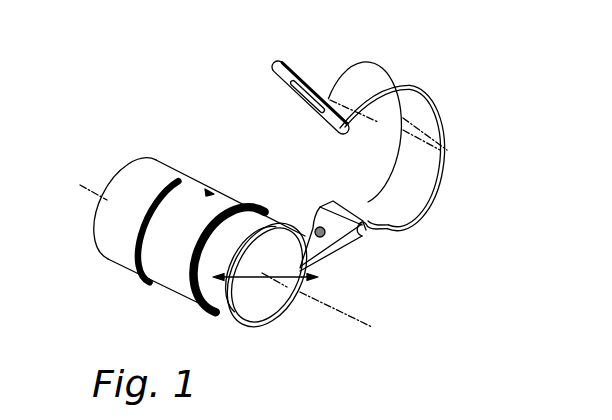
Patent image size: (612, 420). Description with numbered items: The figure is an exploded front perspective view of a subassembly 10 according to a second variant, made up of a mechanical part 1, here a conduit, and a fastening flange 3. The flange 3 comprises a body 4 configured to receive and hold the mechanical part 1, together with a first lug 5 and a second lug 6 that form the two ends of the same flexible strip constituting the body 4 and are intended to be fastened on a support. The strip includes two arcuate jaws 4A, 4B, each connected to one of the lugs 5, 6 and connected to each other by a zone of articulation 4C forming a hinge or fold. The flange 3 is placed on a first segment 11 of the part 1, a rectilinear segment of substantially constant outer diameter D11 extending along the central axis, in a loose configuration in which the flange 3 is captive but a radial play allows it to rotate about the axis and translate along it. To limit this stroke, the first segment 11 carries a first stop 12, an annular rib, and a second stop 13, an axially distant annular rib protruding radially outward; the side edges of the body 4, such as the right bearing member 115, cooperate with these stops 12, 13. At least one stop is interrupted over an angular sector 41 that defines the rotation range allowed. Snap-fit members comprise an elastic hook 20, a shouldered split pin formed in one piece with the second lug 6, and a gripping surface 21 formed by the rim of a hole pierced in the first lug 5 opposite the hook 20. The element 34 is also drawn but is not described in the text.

The mechanical part 1 is at (96, 249).
The subassembly 10 is at (216, 74).
The first segment 11 is at (108, 225).
The first stop 12 is at (137, 272).
The second stop 13 is at (185, 298).
The angular sector 41 is at (190, 183).
The outer diameter D11 is at (263, 279).
The fastening flange 3 is at (358, 58).
The body 4 is at (384, 76).
The arcuate jaw 4A is at (400, 84).
The arcuate jaw 4B is at (410, 226).
The zone of articulation 4C is at (446, 150).
The right bearing member 115 is at (434, 210).
The first lug 5 is at (293, 63).
The gripping surface 21 is at (317, 118).
The second lug 6 is at (327, 250).
The elastic hook 20 is at (313, 203).
The fastener 34 is at (310, 228).